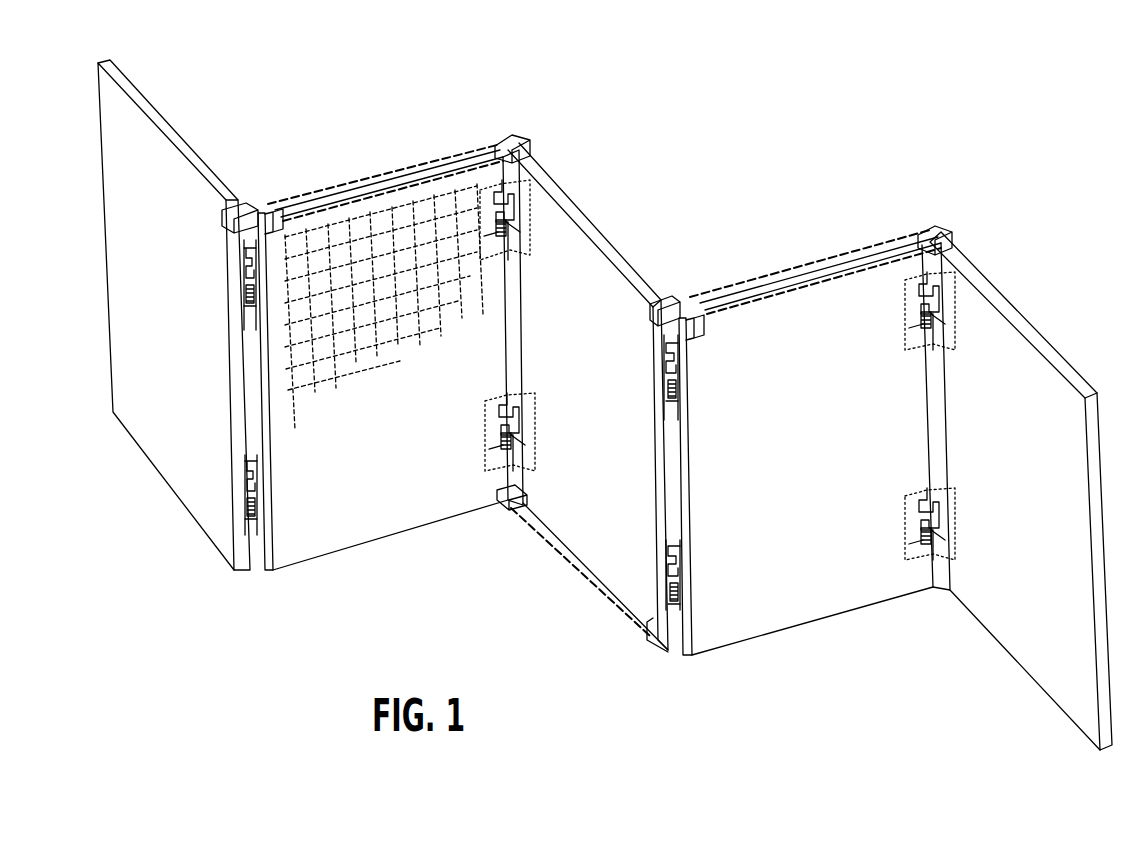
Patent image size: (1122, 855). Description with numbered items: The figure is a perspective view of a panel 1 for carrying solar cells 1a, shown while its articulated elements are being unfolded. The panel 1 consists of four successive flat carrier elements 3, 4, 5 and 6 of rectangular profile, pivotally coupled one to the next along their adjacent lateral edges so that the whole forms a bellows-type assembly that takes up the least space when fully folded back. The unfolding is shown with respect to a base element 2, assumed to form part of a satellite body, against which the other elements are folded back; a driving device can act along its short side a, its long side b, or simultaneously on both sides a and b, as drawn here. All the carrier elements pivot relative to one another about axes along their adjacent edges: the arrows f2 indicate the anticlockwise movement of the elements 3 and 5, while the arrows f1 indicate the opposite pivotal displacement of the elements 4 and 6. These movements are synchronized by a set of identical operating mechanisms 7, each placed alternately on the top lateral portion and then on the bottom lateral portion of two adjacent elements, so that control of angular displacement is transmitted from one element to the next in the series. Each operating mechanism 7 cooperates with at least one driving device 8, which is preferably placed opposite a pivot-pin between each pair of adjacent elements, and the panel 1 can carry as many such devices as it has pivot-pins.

The panel 1 is at (651, 131).
The solar cells 1a is at (346, 322).
The base element 2 is at (143, 112).
The articulated carrier element 3 is at (310, 566).
The articulated carrier element 4 is at (552, 186).
The articulated carrier element 5 is at (768, 634).
The articulated carrier element 6 is at (1000, 299).
The operating mechanism 7 is at (314, 187).
The driving device 8 is at (242, 327).
The short side a is at (136, 440).
The long side b is at (110, 317).
The arrows f1 is at (610, 258).
The arrows f2 is at (416, 527).